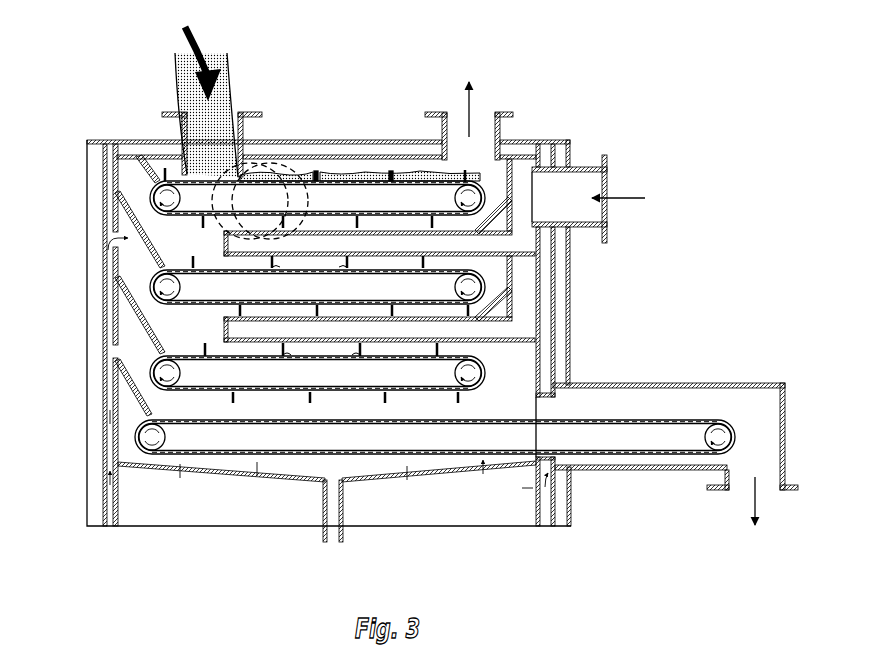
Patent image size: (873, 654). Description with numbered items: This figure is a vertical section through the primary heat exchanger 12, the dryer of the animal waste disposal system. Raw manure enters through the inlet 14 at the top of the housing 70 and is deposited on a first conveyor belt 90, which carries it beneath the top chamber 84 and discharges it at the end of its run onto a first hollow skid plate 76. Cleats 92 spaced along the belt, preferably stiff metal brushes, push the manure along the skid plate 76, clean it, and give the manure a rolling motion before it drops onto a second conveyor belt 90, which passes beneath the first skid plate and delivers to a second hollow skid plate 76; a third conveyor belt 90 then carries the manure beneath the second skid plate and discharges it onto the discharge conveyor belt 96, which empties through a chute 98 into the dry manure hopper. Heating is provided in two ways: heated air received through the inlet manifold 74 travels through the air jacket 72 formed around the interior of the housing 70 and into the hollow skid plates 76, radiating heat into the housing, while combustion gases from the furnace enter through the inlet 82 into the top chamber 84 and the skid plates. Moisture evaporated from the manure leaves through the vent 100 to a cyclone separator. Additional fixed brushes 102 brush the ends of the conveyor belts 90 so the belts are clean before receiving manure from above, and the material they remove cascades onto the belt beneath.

The primary heat exchanger 12 is at (112, 84).
The inlet 14 is at (243, 128).
The housing 70 is at (85, 173).
The air jacket 72 is at (110, 395).
The inlet manifold 74 is at (328, 505).
The hollow skid plate 76 is at (232, 242).
The inlet 82 is at (588, 167).
The top chamber 84 is at (320, 152).
The conveyor belt 90 is at (180, 170).
The cleats 92 is at (328, 307).
The discharge conveyor belt 96 is at (135, 435).
The chute 98 is at (788, 430).
The vent 100 is at (510, 128).
The brushes 102 is at (140, 228).